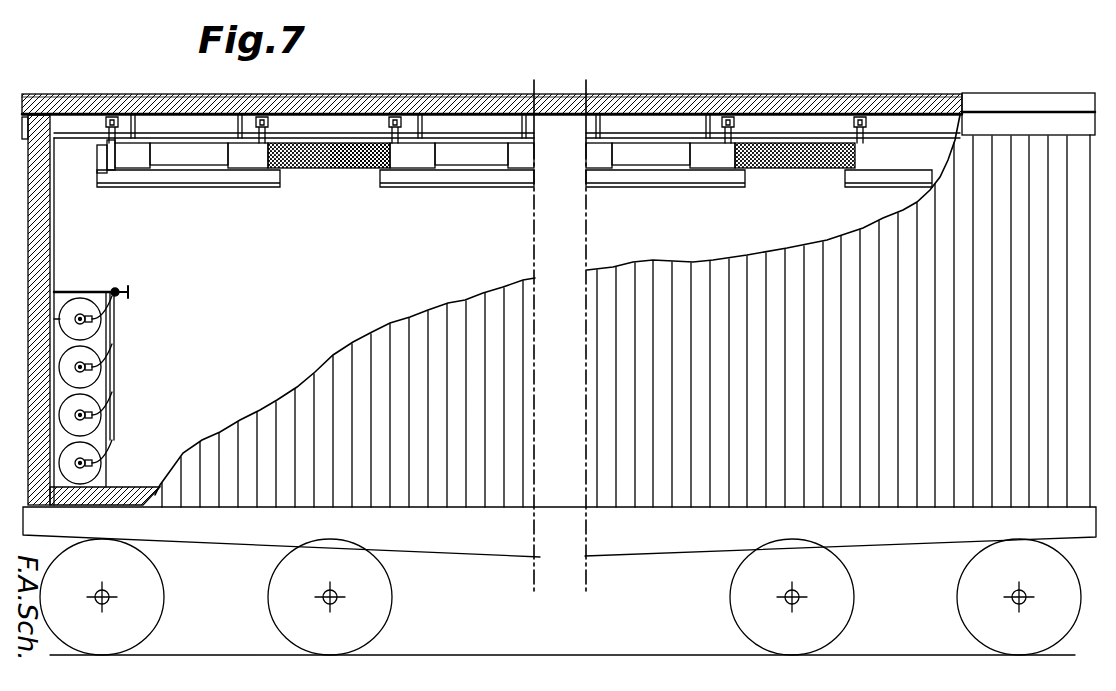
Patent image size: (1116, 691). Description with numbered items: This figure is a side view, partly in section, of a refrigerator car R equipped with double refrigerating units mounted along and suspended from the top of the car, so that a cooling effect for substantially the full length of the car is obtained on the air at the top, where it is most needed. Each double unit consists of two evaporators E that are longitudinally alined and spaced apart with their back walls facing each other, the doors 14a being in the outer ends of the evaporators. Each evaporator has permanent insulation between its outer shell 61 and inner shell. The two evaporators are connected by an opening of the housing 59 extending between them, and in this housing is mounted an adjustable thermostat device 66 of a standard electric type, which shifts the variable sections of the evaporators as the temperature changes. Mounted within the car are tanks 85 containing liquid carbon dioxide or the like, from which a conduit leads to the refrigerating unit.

The door 14a is at (105, 160).
The evaporator E is at (130, 160).
The outer shell 61 is at (190, 170).
The adjustable thermostat device 66 is at (320, 160).
The housing 59 is at (363, 163).
The refrigerator car R is at (403, 340).
The tank 85 is at (88, 428).